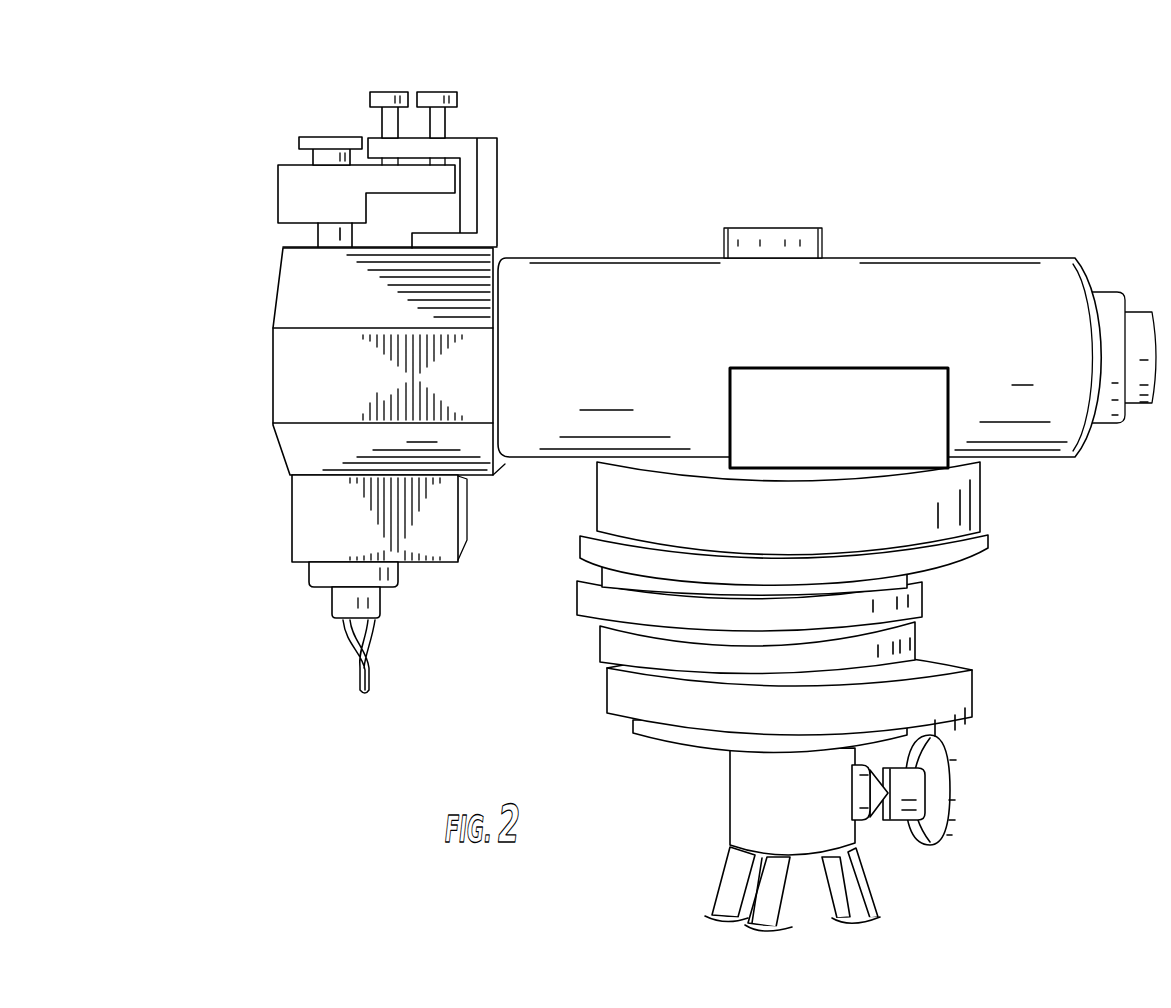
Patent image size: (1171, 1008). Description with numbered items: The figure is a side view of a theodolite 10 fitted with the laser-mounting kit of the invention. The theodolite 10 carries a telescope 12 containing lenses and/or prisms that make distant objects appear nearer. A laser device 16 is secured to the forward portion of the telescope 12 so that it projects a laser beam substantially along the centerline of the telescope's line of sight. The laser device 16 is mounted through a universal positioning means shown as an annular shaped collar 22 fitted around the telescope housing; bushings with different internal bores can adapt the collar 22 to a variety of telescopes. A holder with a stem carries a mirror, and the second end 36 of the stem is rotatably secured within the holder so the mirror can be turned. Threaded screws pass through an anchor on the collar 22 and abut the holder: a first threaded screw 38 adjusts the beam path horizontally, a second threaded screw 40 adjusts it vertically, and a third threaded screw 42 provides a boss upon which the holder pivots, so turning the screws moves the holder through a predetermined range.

The theodolite 10 is at (872, 200).
The telescope 12 is at (982, 292).
The laser device 16 is at (309, 571).
The annular shaped collar 22 is at (282, 268).
The second end 36 is at (310, 136).
The first threaded screw 38 is at (372, 92).
The second threaded screw 40 is at (458, 104).
The third threaded screw 42 is at (424, 92).